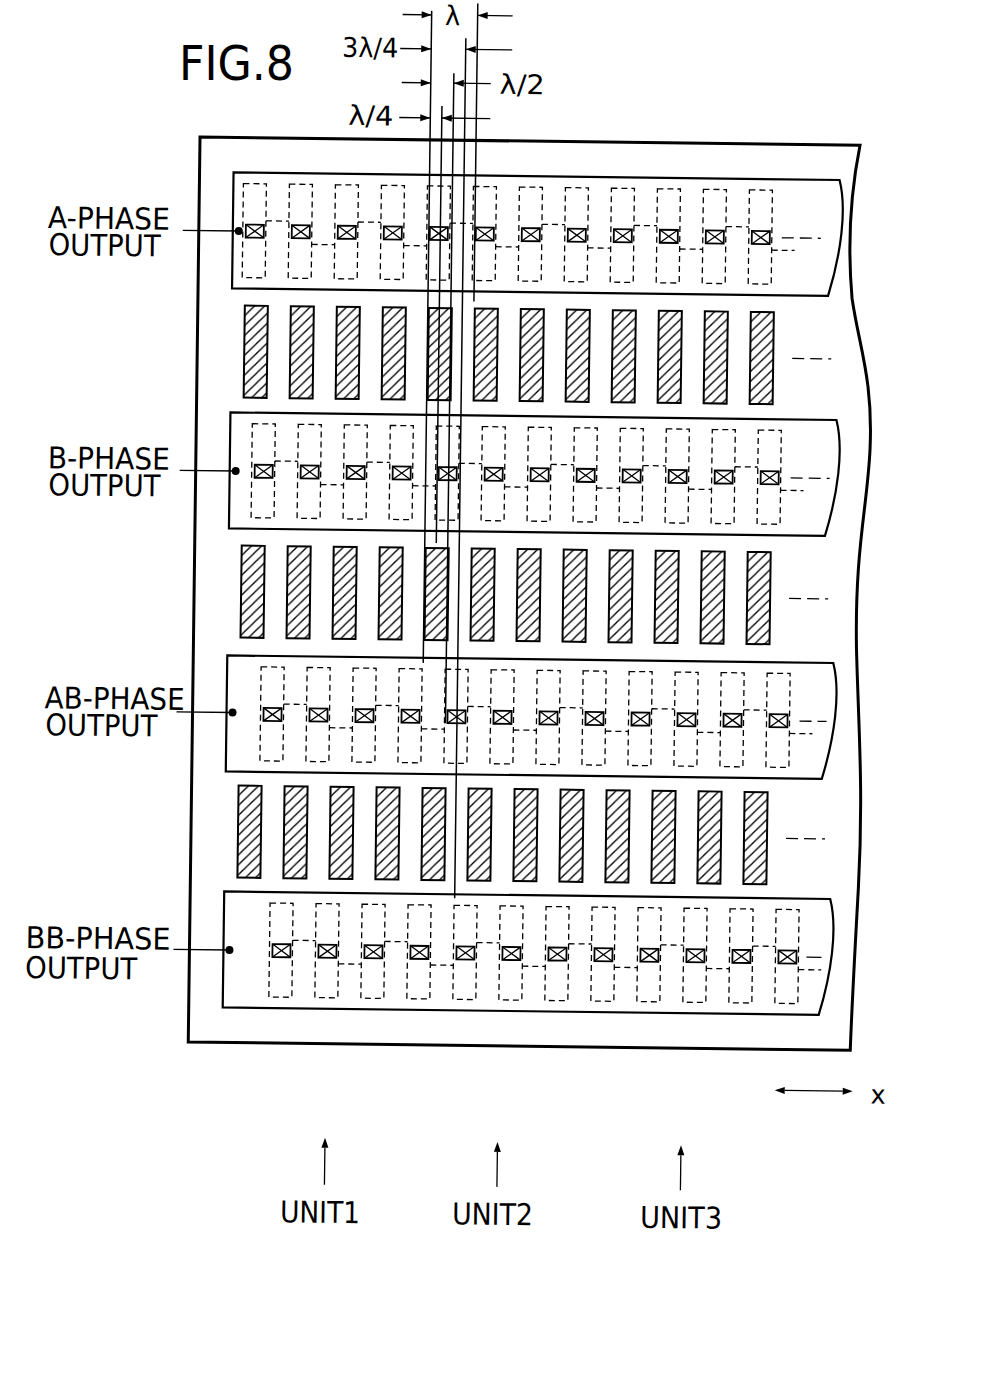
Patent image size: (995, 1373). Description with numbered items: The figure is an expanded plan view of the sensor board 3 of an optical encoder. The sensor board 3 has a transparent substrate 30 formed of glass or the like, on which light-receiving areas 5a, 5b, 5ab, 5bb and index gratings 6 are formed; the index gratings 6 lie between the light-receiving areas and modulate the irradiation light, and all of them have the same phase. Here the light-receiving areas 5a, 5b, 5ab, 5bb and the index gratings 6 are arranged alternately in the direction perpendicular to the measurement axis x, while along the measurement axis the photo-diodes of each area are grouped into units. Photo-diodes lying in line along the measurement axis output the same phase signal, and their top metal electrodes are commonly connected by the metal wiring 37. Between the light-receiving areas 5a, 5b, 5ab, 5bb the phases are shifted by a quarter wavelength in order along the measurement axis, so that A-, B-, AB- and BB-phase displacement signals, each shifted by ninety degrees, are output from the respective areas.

The sensor board 3 is at (506, 646).
The transparent substrate 30 is at (702, 1037).
The metal wiring 37 is at (235, 902).
The index gratings 6 is at (246, 814).
The light-receiving area 5a is at (781, 216).
The light-receiving area 5b is at (791, 438).
The light-receiving area 5ab is at (802, 680).
The light-receiving area 5bb is at (815, 922).